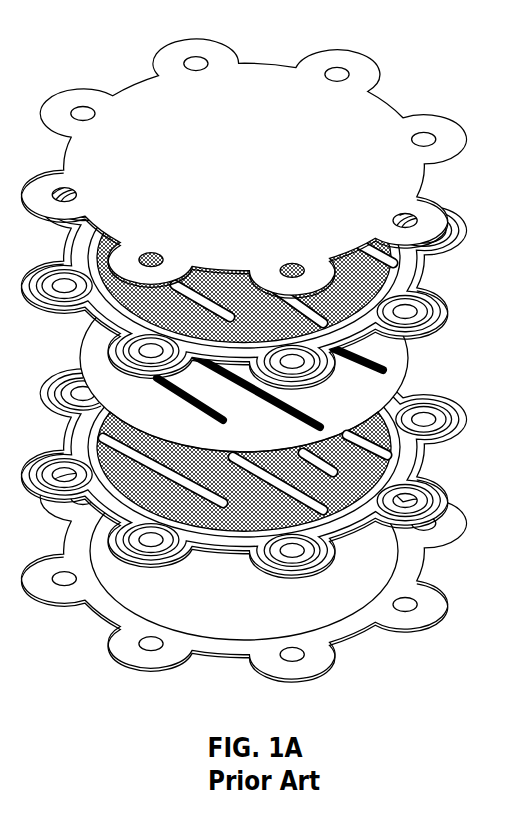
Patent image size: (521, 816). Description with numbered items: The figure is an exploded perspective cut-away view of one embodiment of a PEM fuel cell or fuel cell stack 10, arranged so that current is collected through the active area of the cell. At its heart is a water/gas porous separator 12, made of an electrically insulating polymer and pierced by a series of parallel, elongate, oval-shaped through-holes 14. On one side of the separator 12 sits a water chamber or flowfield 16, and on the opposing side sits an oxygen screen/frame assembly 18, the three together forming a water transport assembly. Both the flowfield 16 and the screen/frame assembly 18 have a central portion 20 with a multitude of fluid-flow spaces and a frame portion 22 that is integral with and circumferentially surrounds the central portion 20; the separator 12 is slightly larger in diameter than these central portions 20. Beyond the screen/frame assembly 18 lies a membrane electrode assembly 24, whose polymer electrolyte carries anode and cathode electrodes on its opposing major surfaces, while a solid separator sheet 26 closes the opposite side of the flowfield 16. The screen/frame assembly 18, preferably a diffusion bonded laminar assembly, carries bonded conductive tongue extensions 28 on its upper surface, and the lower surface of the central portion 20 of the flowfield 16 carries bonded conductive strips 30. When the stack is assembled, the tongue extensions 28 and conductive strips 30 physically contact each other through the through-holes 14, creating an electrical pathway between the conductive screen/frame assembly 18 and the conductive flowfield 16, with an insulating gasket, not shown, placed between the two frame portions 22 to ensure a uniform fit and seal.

The fuel cell stack 10 is at (416, 60).
The water/gas porous separator 12 is at (407, 363).
The through-holes 14 is at (183, 404).
The water chamber or flowfield 16 is at (423, 278).
The oxygen screen/frame assembly 18 is at (421, 463).
The central portion 20 is at (132, 315).
The frame portion 22 is at (400, 313).
The membrane electrode assembly 24 is at (245, 620).
The solid separator sheet 26 is at (235, 175).
The conductive tongue extensions 28 is at (327, 514).
The conductive strips 30 is at (370, 252).